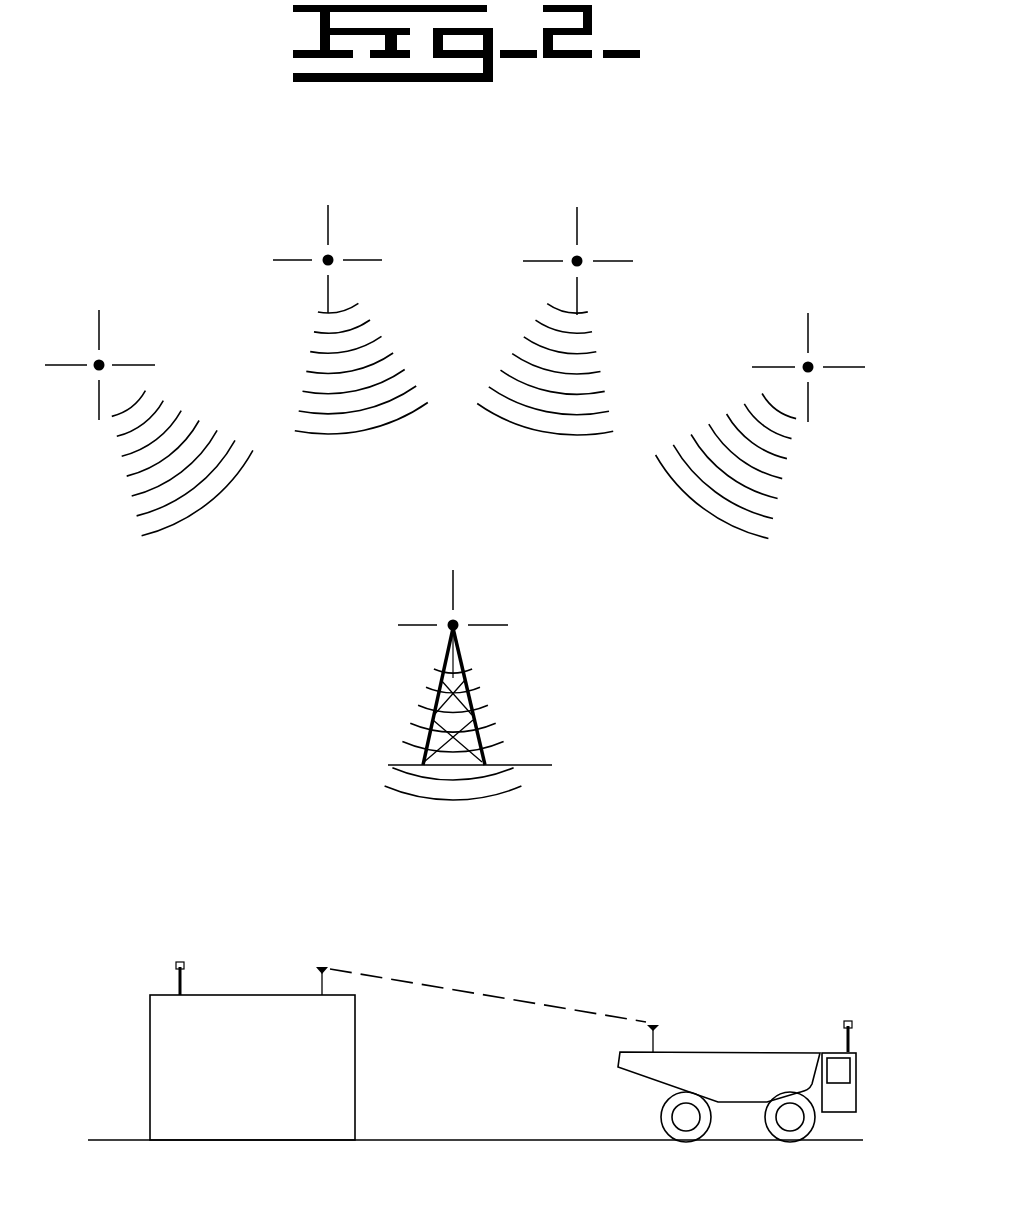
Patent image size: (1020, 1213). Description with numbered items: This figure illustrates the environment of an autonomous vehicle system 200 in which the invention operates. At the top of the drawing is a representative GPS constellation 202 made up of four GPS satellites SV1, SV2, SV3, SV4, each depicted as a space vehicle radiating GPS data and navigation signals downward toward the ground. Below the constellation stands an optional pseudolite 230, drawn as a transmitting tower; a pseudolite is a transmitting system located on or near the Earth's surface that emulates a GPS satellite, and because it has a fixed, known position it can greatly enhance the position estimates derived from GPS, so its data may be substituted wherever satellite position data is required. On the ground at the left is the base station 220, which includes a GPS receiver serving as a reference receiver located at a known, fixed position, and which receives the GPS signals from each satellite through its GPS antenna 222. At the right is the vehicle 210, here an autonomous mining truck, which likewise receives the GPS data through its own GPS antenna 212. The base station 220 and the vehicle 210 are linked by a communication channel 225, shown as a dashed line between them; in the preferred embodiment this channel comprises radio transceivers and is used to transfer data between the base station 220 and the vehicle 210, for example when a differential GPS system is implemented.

The autonomous vehicle system 200 is at (200, 144).
The GPS constellation 202 is at (486, 203).
The GPS satellite SV1 is at (99, 362).
The GPS satellite SV2 is at (330, 256).
The GPS satellite SV3 is at (579, 257).
The GPS satellite SV4 is at (810, 362).
The pseudolite 230 is at (475, 703).
The base station 220 is at (278, 1077).
The GPS antenna 222 is at (184, 966).
The communication channel 225 is at (540, 1003).
The vehicle 210 is at (857, 1070).
The GPS antenna 212 is at (847, 1023).